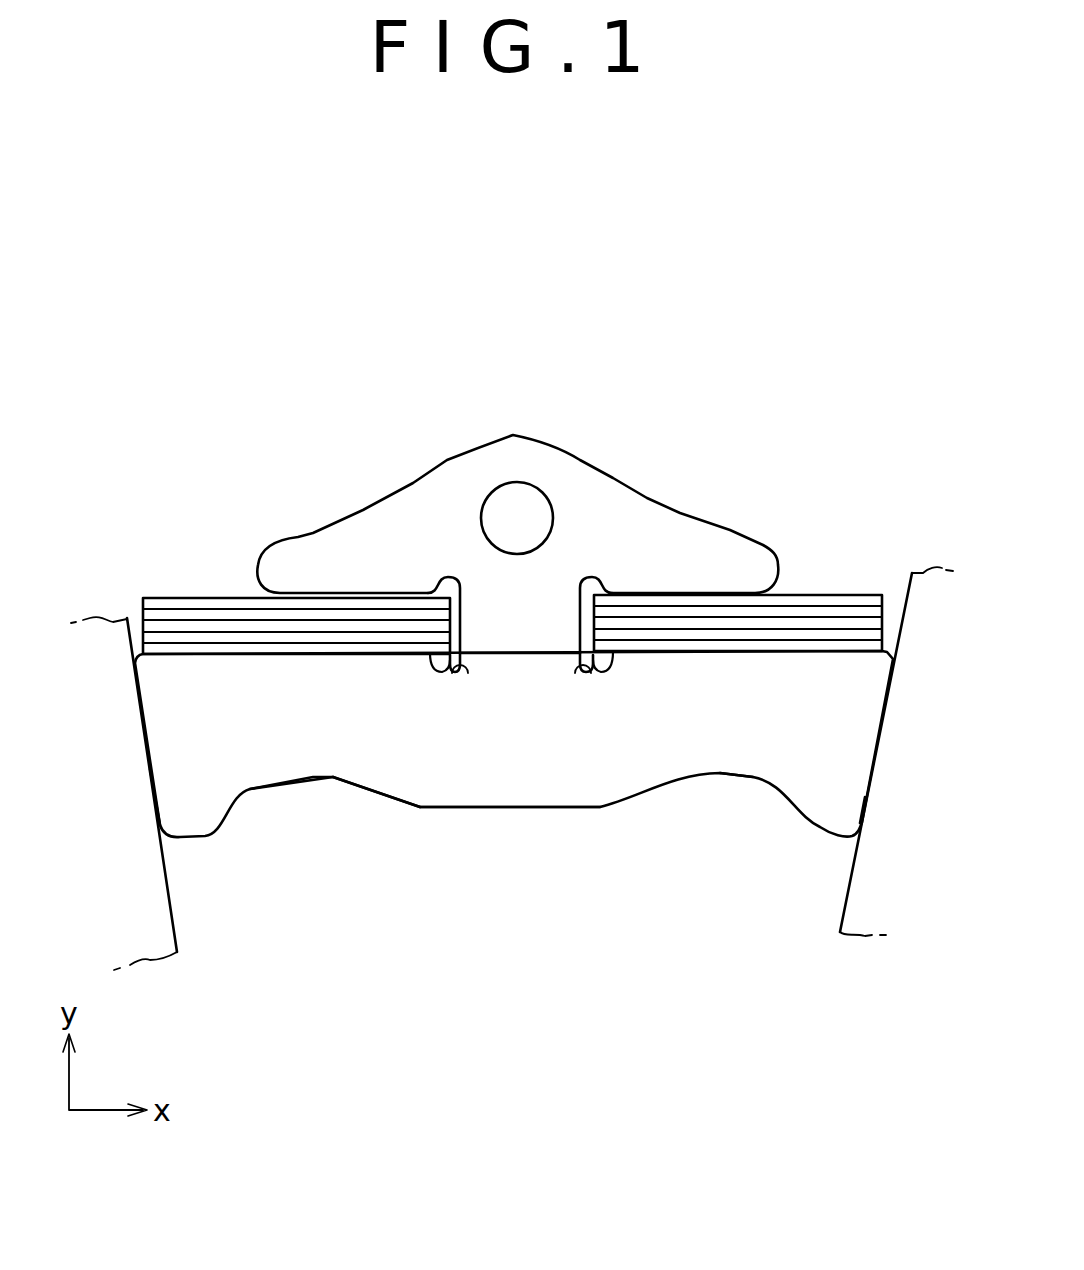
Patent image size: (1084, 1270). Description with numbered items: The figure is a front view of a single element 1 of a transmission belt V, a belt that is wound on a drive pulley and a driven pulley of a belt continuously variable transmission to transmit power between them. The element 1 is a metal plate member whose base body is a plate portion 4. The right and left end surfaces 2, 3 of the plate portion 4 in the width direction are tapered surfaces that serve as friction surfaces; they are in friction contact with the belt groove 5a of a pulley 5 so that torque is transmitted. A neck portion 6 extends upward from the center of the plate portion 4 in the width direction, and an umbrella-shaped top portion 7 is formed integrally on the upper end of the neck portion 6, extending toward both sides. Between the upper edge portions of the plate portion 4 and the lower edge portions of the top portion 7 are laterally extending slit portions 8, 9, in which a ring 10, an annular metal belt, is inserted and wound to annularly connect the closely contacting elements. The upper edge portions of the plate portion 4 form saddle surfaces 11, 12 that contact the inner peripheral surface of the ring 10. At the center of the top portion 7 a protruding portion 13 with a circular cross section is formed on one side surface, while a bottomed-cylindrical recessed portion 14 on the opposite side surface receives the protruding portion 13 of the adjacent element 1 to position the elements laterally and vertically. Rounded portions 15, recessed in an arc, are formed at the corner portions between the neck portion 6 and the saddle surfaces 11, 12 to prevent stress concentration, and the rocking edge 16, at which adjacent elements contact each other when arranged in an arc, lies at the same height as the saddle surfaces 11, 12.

The element 1 is at (478, 846).
The right tapered end surface 2 is at (865, 797).
The left tapered end surface 3 is at (150, 769).
The plate portion 4 is at (630, 773).
The pulley 5 is at (107, 673).
The belt groove 5a is at (172, 898).
The neck portion 6 is at (567, 621).
The top portion 7 is at (585, 482).
The slit portion 8 is at (707, 594).
The slit portion 9 is at (318, 595).
The ring 10 is at (217, 628).
The saddle surface 11 is at (292, 653).
The saddle surface 12 is at (735, 650).
The protruding portion 13 is at (490, 492).
The recessed portion 14 is at (517, 518).
The rounded portion 15 is at (468, 673).
The rocking edge 16 is at (488, 654).
The transmission belt V is at (674, 422).